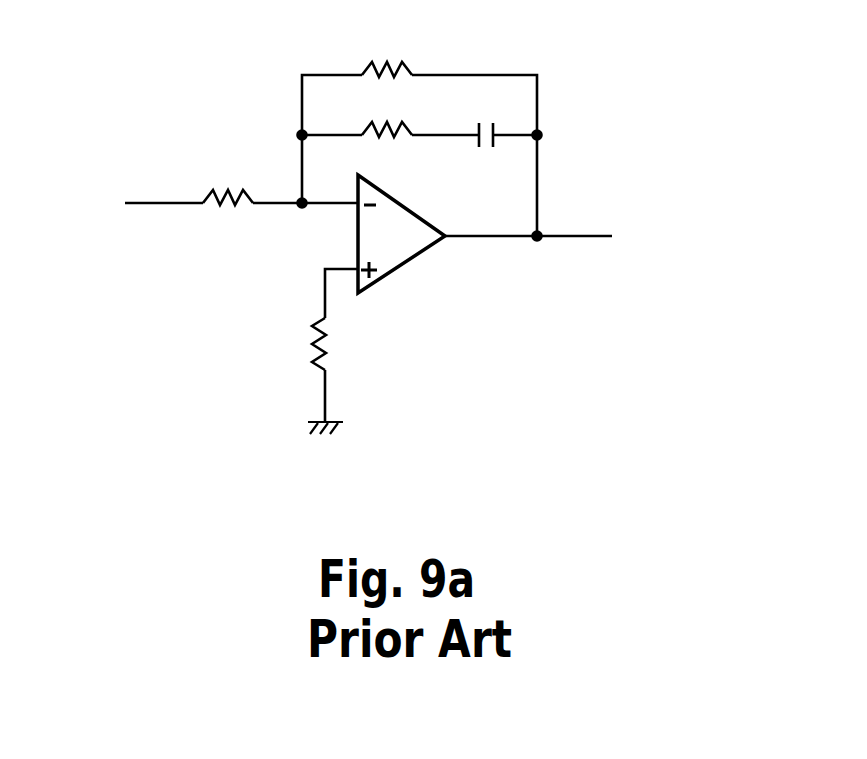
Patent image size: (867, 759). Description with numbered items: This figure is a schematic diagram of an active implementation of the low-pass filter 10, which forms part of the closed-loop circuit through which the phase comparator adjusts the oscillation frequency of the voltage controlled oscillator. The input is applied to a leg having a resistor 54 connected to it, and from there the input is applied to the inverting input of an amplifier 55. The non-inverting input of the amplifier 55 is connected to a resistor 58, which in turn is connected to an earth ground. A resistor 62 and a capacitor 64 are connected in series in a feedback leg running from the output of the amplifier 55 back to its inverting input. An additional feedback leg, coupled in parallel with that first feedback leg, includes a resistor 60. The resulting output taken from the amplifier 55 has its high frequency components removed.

The low-pass filter 10 is at (522, 322).
The resistor 54 is at (227, 210).
The amplifier 55 is at (400, 270).
The resistor 58 is at (328, 352).
The resistor 60 is at (407, 60).
The resistor 62 is at (412, 127).
The capacitor 64 is at (500, 141).